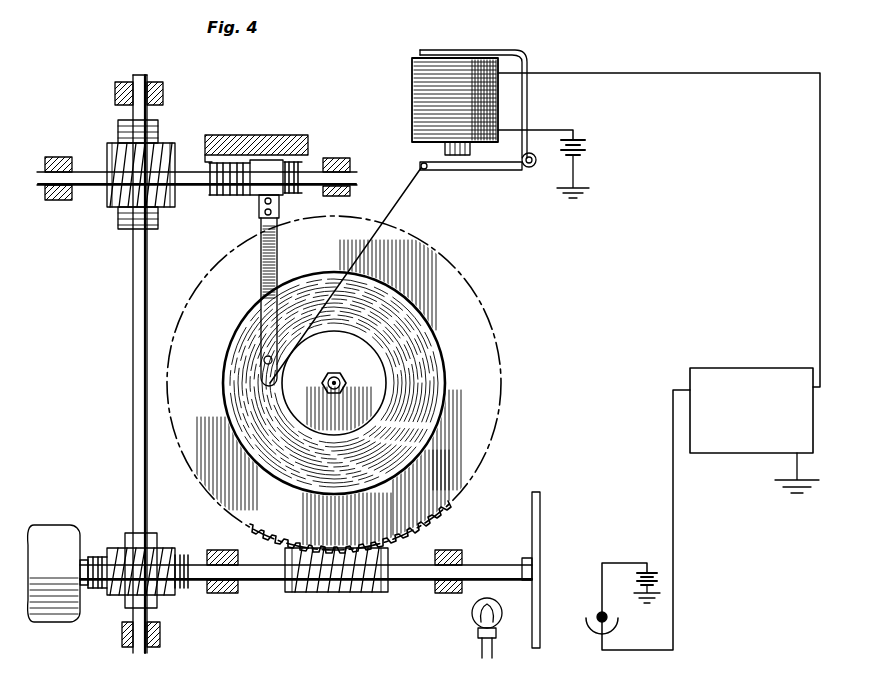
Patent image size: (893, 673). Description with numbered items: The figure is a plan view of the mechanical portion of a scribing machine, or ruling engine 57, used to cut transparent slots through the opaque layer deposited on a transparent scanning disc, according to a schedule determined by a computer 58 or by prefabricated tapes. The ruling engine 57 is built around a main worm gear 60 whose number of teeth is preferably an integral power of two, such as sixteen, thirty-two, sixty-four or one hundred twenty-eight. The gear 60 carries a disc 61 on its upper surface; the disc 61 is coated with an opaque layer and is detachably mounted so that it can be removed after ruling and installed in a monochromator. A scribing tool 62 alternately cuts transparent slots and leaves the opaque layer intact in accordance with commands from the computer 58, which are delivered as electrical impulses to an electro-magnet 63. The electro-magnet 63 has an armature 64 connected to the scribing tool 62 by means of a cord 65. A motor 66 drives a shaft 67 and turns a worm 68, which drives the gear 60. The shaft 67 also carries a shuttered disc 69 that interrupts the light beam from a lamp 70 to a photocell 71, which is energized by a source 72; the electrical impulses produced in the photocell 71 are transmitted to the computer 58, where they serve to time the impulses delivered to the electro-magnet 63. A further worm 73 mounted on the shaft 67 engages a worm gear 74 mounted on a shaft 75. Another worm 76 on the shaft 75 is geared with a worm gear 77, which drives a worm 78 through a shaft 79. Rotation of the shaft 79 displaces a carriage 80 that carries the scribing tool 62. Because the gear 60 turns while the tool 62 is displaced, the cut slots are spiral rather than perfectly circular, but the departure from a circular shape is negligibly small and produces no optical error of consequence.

The scribing machine 57 is at (537, 274).
The computer 58 is at (754, 430).
The main worm gear 60 is at (493, 341).
The disc 61 is at (445, 366).
The scribing tool 62 is at (261, 282).
The electro-magnet 63 is at (412, 97).
The armature 64 is at (489, 172).
The cord 65 is at (408, 220).
The motor 66 is at (56, 530).
The shaft 67 is at (258, 579).
The worm 68 is at (355, 591).
The shuttered disc 69 is at (540, 526).
The lamp 70 is at (472, 615).
The photocell 71 is at (614, 622).
The source 72 is at (656, 570).
The worm 73 is at (164, 596).
The worm gear 74 is at (100, 548).
The shaft 75 is at (133, 358).
The worm 76 is at (130, 189).
The worm gear 77 is at (125, 229).
The worm 78 is at (305, 167).
The shaft 79 is at (187, 171).
The carriage 80 is at (260, 188).